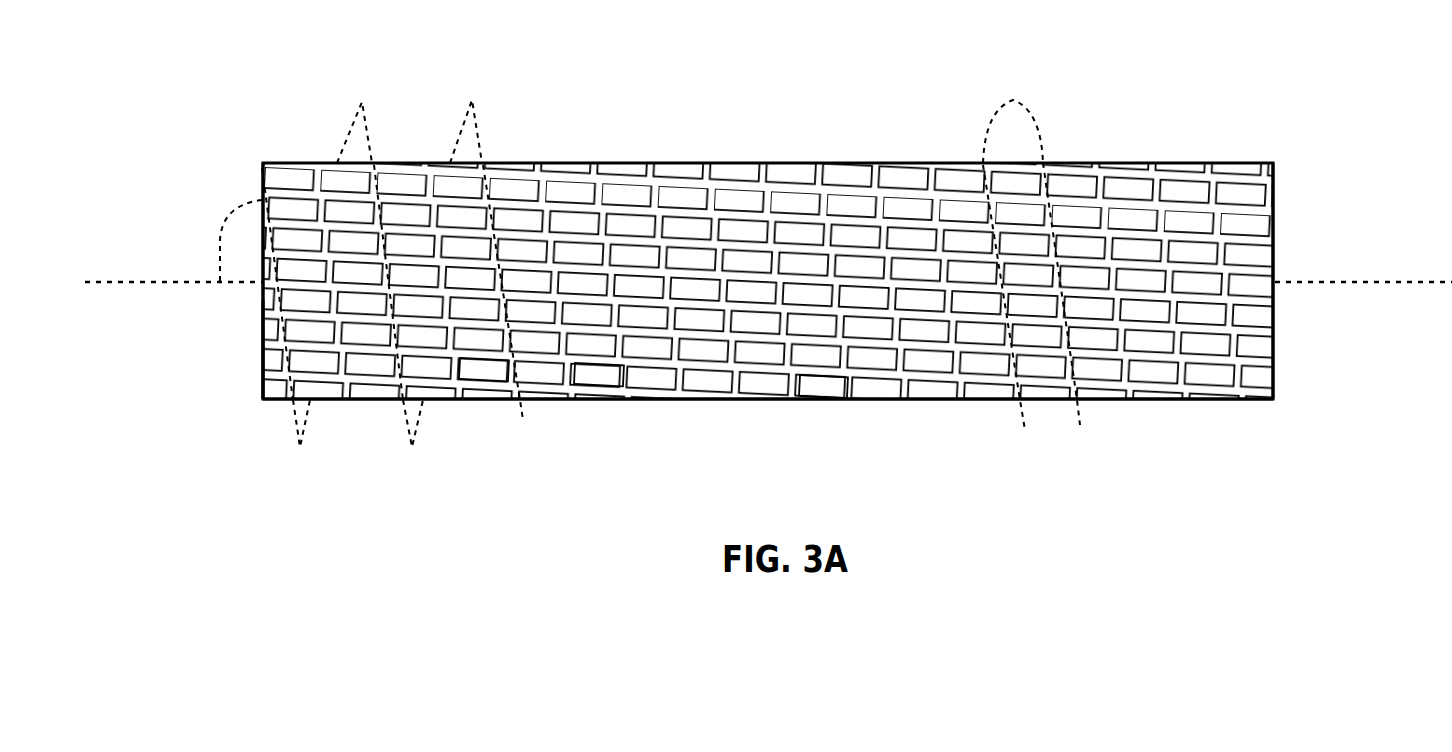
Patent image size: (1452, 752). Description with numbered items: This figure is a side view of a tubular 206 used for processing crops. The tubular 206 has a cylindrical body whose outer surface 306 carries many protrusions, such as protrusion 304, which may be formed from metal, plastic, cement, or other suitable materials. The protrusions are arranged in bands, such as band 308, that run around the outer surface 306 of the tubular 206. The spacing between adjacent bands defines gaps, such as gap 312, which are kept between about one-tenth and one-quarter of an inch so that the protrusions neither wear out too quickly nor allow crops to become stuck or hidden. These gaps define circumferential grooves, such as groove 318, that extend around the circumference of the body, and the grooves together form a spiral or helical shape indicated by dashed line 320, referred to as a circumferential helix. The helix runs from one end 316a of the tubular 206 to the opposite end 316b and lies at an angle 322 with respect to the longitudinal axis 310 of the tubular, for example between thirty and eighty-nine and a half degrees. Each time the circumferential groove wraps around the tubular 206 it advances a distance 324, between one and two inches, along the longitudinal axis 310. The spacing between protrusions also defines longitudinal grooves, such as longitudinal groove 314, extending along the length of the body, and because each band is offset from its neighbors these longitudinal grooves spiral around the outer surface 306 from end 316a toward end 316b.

The tubular 206 is at (608, 95).
The protrusion 304 is at (823, 383).
The outer surface 306 is at (1273, 399).
The band 308 is at (1031, 246).
The longitudinal axis 310 is at (130, 282).
The gap 312 is at (466, 378).
The longitudinal groove 314 is at (258, 376).
The end 316a is at (263, 163).
The opposite end 316b is at (1273, 163).
The groove 318 is at (581, 388).
The dashed line 320 is at (295, 432).
The angle 322 is at (220, 222).
The distance 324 is at (472, 75).